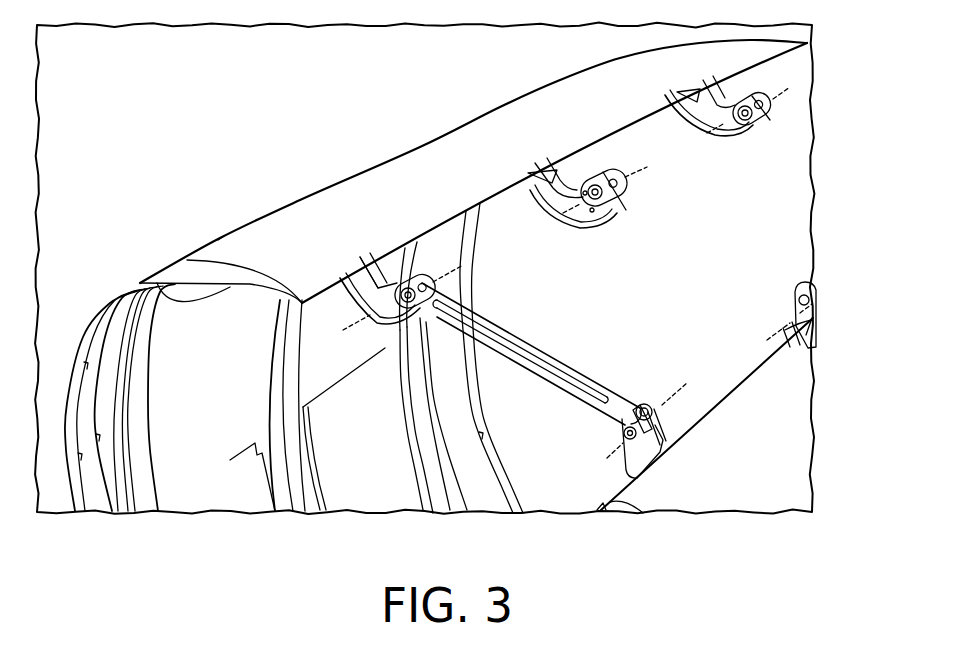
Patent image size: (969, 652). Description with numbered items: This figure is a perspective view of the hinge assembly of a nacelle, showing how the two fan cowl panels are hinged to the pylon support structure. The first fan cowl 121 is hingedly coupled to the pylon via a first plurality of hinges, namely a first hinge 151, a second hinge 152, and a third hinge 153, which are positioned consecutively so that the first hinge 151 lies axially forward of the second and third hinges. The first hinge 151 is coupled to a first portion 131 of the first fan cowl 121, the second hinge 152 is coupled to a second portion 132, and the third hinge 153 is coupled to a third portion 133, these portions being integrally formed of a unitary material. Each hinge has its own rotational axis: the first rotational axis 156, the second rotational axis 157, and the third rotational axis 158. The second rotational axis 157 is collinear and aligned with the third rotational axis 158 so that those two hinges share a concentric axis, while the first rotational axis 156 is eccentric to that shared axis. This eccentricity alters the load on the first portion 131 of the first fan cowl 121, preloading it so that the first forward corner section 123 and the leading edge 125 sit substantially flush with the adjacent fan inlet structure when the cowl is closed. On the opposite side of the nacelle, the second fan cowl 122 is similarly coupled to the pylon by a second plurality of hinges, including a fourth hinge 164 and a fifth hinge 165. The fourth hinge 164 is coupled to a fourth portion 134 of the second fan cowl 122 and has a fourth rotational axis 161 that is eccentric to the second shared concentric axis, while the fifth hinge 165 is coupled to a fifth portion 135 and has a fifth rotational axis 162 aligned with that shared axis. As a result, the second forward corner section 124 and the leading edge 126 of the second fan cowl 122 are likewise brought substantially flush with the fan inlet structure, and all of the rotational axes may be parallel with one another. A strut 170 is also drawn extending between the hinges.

The first fan cowl 121 is at (214, 238).
The second fan cowl 122 is at (752, 448).
The first forward corner section 123 is at (187, 260).
The second forward corner section 124 is at (645, 515).
The leading edge of the first fan cowl 125 is at (136, 280).
The leading edge of the second fan cowl 126 is at (597, 513).
The first portion of the first fan cowl 131 is at (461, 165).
The second portion of the first fan cowl 132 is at (543, 140).
The third portion of the first fan cowl 133 is at (673, 66).
The fourth portion of the second fan cowl 134 is at (693, 477).
The fifth portion of the second fan cowl 135 is at (808, 345).
The first hinge 151 is at (432, 329).
The second hinge 152 is at (601, 214).
The third hinge 153 is at (758, 125).
The first rotational axis 156 is at (450, 268).
The second rotational axis 157 is at (637, 172).
The third rotational axis 158 is at (793, 97).
The fourth rotational axis 161 is at (677, 415).
The fifth rotational axis 162 is at (806, 340).
The fourth hinge 164 is at (644, 394).
The fifth hinge 165 is at (776, 277).
The strut 170 is at (520, 347).